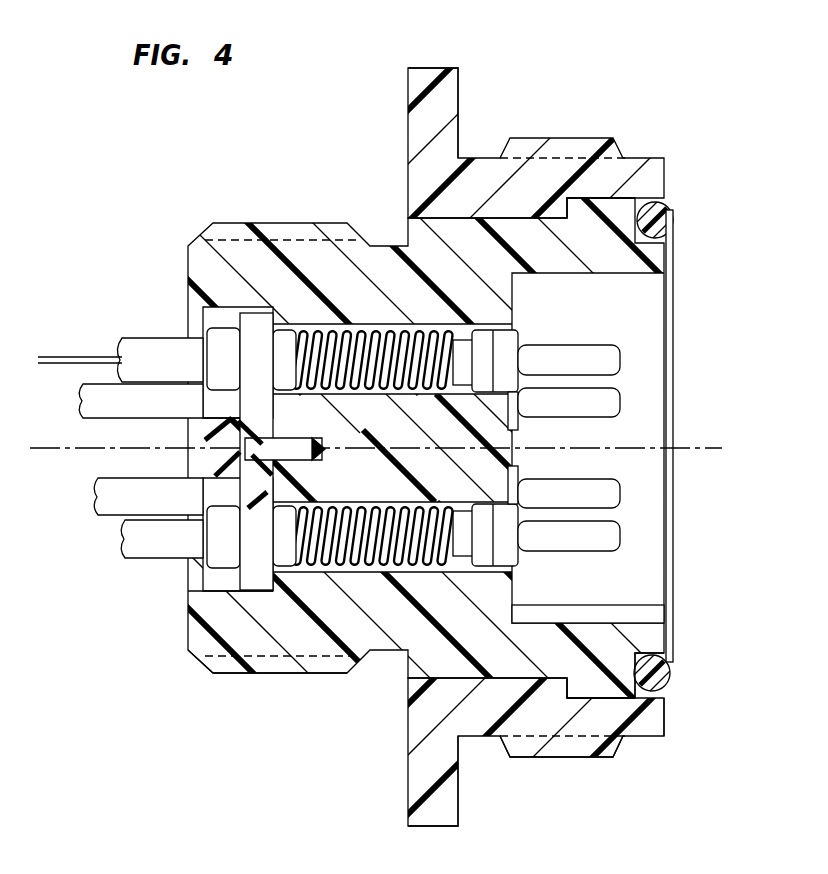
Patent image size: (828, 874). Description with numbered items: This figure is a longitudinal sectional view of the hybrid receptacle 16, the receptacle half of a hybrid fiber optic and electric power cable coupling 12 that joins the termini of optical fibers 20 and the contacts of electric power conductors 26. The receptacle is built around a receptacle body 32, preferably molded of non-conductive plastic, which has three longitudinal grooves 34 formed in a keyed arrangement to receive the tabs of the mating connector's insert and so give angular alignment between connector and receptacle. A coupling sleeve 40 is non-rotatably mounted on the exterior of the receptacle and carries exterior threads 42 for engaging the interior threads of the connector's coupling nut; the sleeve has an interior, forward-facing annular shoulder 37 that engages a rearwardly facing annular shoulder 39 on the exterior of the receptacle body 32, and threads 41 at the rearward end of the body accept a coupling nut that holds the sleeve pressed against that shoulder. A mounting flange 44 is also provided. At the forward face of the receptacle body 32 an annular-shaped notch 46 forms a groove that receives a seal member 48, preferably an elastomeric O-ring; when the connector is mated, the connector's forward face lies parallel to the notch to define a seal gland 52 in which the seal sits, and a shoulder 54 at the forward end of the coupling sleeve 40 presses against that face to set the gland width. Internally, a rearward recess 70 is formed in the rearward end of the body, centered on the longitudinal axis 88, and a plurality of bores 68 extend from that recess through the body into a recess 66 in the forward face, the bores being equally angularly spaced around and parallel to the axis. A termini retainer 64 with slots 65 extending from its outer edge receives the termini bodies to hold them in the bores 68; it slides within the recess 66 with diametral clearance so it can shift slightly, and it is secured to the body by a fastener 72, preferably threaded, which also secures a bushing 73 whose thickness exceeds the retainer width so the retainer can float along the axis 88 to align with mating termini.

The hybrid fiber optic and electric power cable coupling 12 is at (343, 117).
The hybrid receptacle 16 is at (650, 153).
The optical fibers 20 is at (170, 352).
The electric power conductors 26 is at (110, 508).
The receptacle body 32 is at (280, 677).
The grooves 34 is at (647, 610).
The shoulder 37 is at (560, 698).
The shoulder 39 is at (557, 203).
The coupling sleeve 40 is at (410, 775).
The threads 41 is at (232, 667).
The exterior threads 42 is at (578, 750).
The mounting flange 44 is at (452, 83).
The annular-shaped notch 46 is at (668, 667).
The seal member 48 is at (665, 675).
The seal gland 52 is at (677, 210).
The shoulder 54 is at (665, 720).
The termini retainer 64 is at (243, 407).
The slots 65 is at (260, 323).
The recess 66 is at (212, 588).
The bores 68 is at (510, 357).
The rearward recess 70 is at (623, 275).
The fastener 72 is at (328, 451).
The bushing 73 is at (272, 432).
The longitudinal axis 88 is at (697, 448).